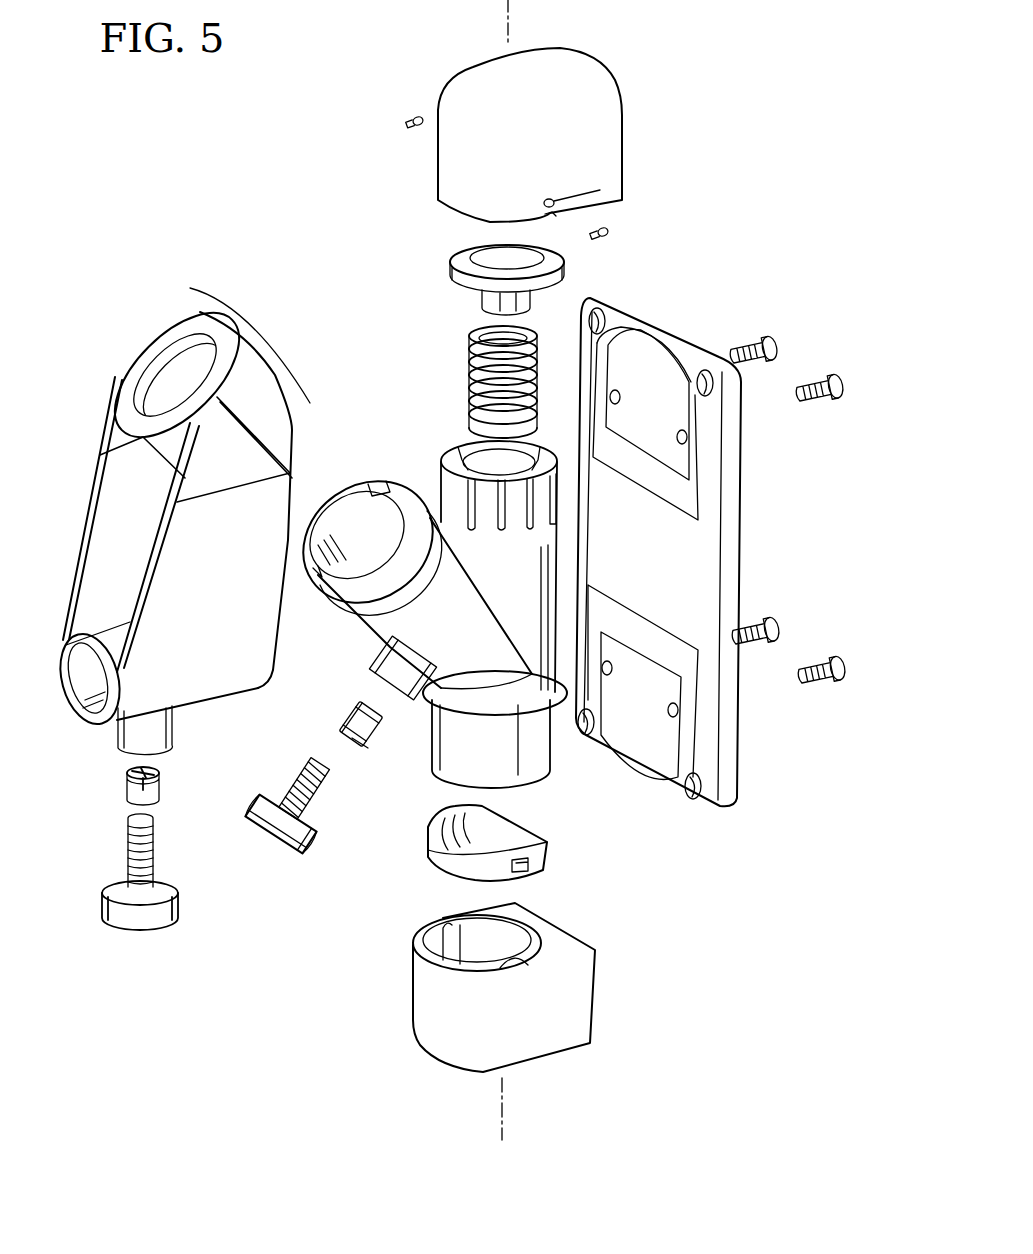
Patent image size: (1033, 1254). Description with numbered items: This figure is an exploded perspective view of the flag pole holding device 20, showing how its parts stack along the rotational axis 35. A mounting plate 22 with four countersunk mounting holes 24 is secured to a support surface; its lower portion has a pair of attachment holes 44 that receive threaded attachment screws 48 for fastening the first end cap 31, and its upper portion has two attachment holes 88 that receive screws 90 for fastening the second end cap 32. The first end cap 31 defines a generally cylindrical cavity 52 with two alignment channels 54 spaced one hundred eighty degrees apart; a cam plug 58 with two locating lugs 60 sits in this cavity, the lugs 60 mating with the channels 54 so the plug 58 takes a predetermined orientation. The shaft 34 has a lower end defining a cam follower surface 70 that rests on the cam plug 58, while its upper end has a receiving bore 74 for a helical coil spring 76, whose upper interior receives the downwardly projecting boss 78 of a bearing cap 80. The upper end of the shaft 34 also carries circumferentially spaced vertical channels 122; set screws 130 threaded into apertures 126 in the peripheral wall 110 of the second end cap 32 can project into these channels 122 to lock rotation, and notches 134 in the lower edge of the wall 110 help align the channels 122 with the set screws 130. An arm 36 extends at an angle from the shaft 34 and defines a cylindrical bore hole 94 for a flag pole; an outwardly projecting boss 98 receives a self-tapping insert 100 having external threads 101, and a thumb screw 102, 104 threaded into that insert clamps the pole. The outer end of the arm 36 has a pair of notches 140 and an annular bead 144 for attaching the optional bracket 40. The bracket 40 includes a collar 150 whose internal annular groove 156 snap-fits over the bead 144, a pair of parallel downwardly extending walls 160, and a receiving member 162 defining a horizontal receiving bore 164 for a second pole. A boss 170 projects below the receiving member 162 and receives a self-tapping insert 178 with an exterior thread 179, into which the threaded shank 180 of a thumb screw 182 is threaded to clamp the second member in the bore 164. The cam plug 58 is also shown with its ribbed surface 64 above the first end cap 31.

The device 20 is at (790, 54).
The plate 22 is at (664, 563).
The countersunk mounting holes 24 is at (590, 330).
The first end cap 31 is at (530, 984).
The second end cap 32 is at (511, 146).
The shaft 34 is at (425, 610).
The rotational axis 35 is at (510, 1118).
The arm 36 is at (406, 568).
The bracket 40 is at (188, 526).
The attachment holes 44 is at (672, 718).
The threaded attachment screws 48 is at (752, 624).
The cylindrical cavity 52 is at (532, 943).
The alignment channels 54 is at (446, 926).
The cam plug 58 is at (472, 840).
The locating lugs 60 is at (530, 868).
The ribs 64 is at (462, 816).
The cam follower surface 70 is at (525, 760).
The receiving bore 74 is at (486, 551).
The helical coil spring 76 is at (468, 350).
The boss 78 is at (478, 298).
The bearing cap 80 is at (469, 277).
The attachment holes 88 is at (680, 436).
The screws 90 is at (752, 342).
The bore hole 94 is at (338, 517).
The boss 98 is at (378, 658).
The self-tapping insert 100 is at (340, 714).
The external threads 101 is at (376, 732).
The thumb screw 102 is at (289, 830).
The thumb screw 104 is at (268, 855).
The peripheral wall 110 is at (610, 140).
The vertical channels 122 is at (535, 530).
The apertures 126 is at (605, 191).
The set screw 130 is at (412, 126).
The notch 134 is at (547, 218).
The notches 140 is at (372, 488).
The annular bead 144 is at (405, 590).
The collar 150 is at (258, 313).
The annular groove 156 is at (165, 372).
The walls 160 is at (143, 573).
The receiving member 162 is at (112, 640).
The receiving bore 164 is at (88, 722).
The boss 170 is at (176, 718).
The self-tapping insert 178 is at (128, 794).
The exterior thread 179 is at (158, 780).
The threaded shank 180 is at (130, 895).
The thumb screw 182 is at (150, 933).